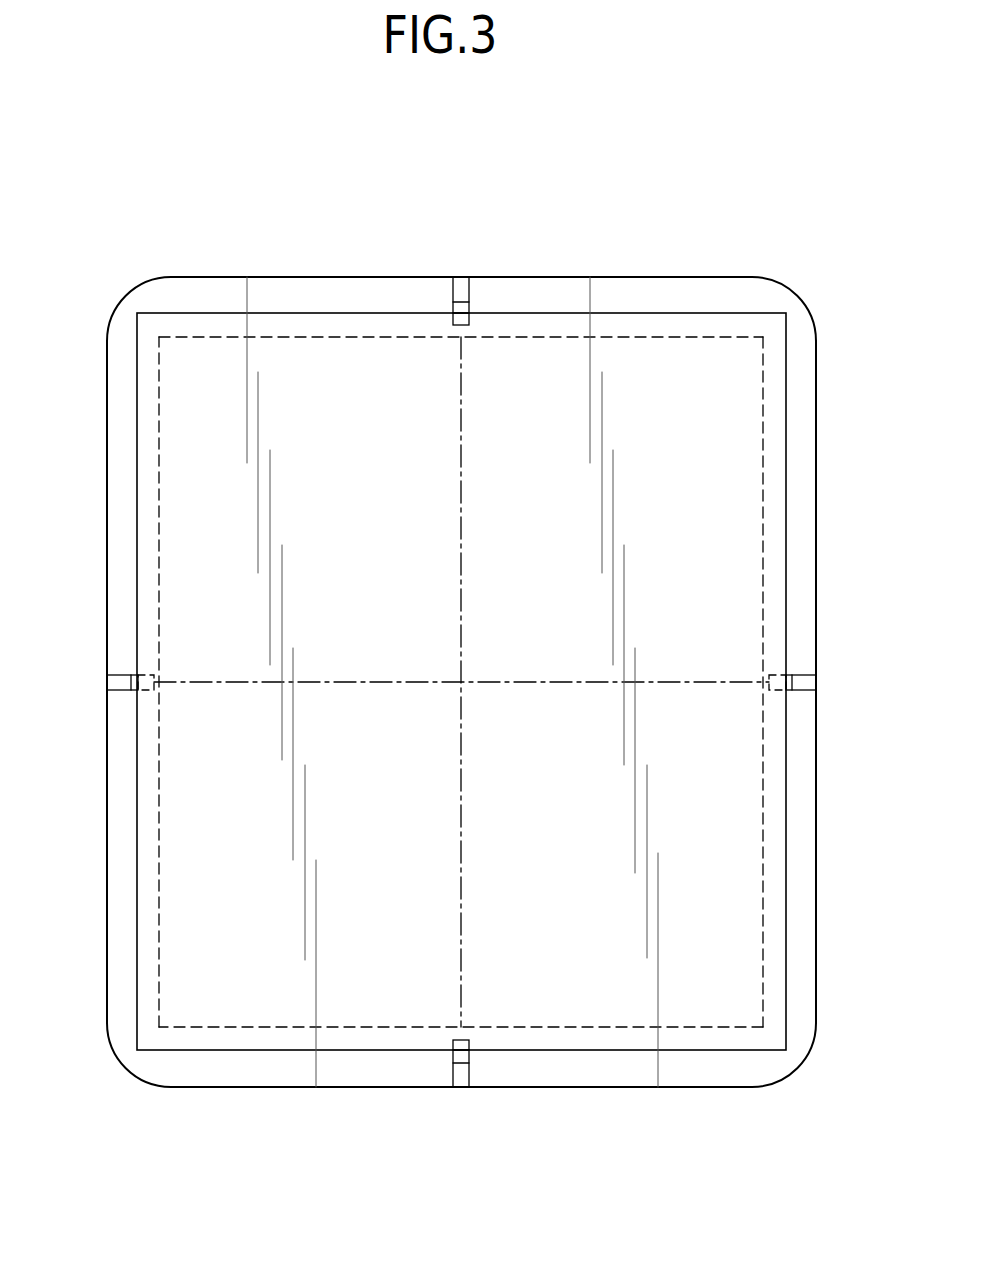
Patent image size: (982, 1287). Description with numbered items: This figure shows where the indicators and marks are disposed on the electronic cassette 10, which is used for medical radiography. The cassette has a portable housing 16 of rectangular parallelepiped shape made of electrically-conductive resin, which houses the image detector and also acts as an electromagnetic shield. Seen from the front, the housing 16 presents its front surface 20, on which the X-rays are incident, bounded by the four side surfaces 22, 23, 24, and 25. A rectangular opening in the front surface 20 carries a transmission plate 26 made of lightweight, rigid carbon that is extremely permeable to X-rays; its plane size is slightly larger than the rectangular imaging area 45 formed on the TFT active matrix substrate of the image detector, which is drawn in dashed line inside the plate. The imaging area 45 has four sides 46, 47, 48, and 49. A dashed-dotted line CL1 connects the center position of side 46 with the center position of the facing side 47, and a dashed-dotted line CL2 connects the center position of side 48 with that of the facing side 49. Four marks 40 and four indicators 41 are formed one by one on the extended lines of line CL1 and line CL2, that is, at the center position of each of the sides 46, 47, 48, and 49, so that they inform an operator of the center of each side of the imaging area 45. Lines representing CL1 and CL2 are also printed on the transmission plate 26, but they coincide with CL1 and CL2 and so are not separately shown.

The electronic cassette 10 is at (226, 264).
The housing 16 is at (646, 266).
The front surface 20 is at (167, 298).
The side surface 22 is at (543, 277).
The side surface 23 is at (290, 1087).
The side surface 24 is at (816, 480).
The side surface 25 is at (107, 480).
The transmission plate 26 is at (347, 313).
The mark 40 is at (461, 288).
The indicator 41 is at (445, 342).
The imaging area 45 is at (739, 353).
The side of imaging area 46 is at (525, 340).
The side of imaging area 47 is at (606, 1028).
The side of imaging area 48 is at (763, 518).
The side of imaging area 49 is at (159, 518).
The line CL1 is at (462, 542).
The line CL2 is at (547, 682).